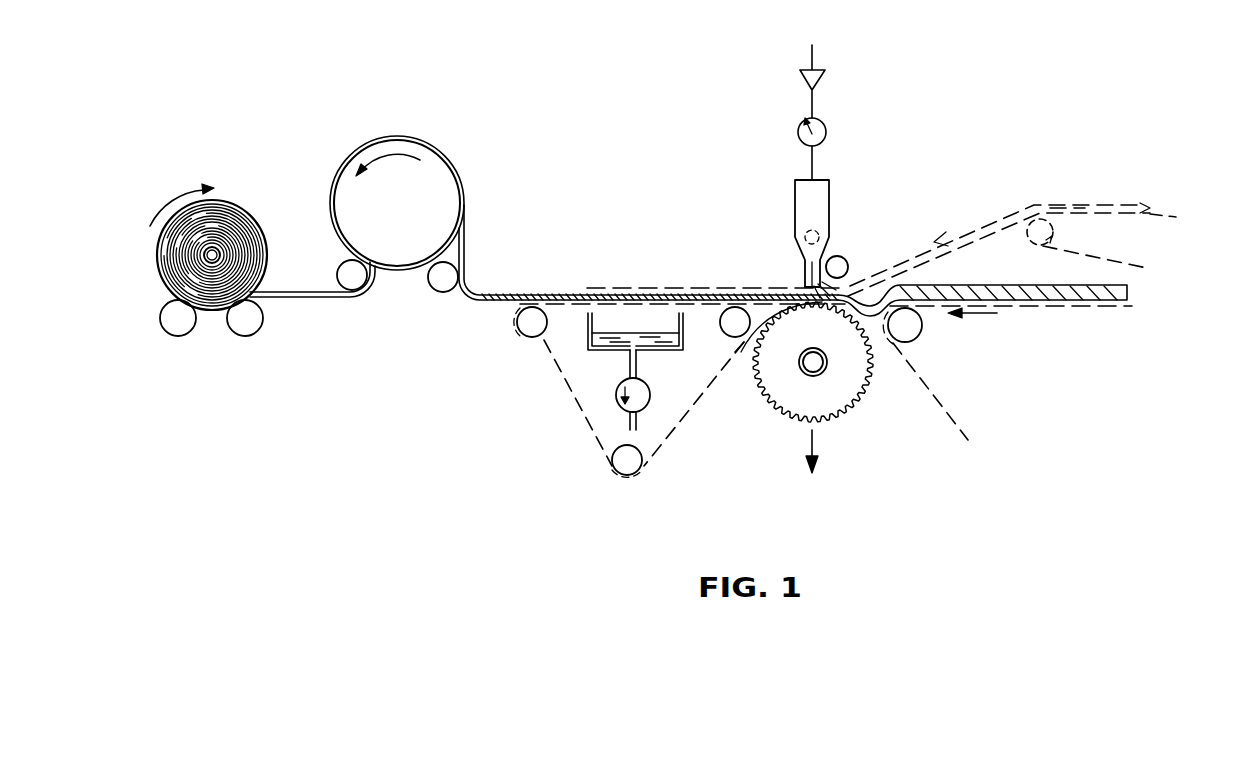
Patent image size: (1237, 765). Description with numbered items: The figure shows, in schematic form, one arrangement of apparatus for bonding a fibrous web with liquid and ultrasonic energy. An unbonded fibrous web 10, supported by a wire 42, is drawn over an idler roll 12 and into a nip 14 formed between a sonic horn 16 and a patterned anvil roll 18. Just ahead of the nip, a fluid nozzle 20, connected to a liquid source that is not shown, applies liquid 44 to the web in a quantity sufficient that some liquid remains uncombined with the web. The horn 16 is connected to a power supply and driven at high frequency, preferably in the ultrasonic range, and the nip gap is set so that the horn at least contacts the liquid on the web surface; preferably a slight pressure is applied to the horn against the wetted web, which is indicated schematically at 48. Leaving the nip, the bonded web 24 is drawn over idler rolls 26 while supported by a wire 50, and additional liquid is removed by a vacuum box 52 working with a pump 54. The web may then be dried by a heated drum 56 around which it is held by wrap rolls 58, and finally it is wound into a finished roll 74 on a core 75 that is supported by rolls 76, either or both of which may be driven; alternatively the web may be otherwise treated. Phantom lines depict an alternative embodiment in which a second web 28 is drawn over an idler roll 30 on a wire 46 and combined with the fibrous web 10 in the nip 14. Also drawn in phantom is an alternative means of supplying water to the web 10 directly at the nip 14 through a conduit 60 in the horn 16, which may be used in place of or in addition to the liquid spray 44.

The unbonded fibrous web 10 is at (1128, 296).
The idler roll 12 is at (913, 335).
The nip 14 is at (745, 356).
The sonic horn 16 is at (796, 202).
The patterned anvil roll 18 is at (800, 405).
The fluid nozzle 20 is at (843, 258).
The bonded web 24 is at (498, 302).
The idler rolls 26 is at (538, 328).
The second web 28 is at (1085, 207).
The idler roll 30 is at (1046, 242).
The wire 42 is at (959, 418).
The liquid 44 is at (868, 276).
The wire 46 is at (1112, 263).
The pressure indication 48 is at (826, 122).
The wire 50 is at (572, 416).
The vacuum box 52 is at (622, 353).
The pump 54 is at (733, 389).
The heated drum 56 is at (381, 219).
The wrap rolls 58 is at (358, 284).
The conduit 60 is at (805, 276).
The finished roll 74 is at (162, 278).
The core 75 is at (216, 252).
The rolls 76 is at (178, 337).